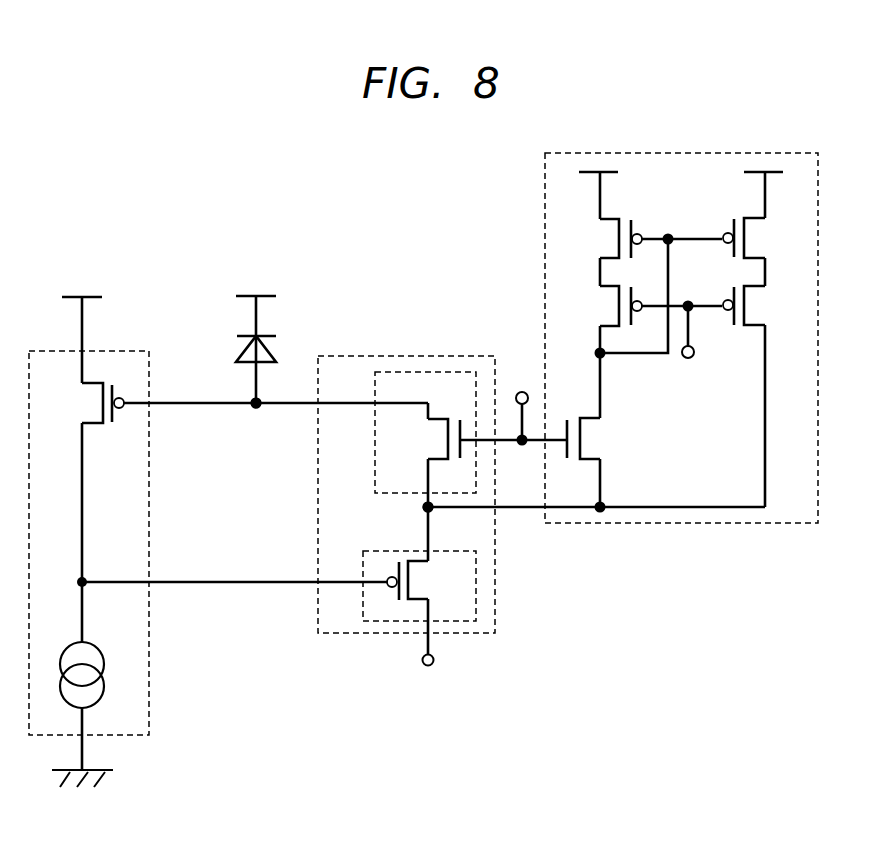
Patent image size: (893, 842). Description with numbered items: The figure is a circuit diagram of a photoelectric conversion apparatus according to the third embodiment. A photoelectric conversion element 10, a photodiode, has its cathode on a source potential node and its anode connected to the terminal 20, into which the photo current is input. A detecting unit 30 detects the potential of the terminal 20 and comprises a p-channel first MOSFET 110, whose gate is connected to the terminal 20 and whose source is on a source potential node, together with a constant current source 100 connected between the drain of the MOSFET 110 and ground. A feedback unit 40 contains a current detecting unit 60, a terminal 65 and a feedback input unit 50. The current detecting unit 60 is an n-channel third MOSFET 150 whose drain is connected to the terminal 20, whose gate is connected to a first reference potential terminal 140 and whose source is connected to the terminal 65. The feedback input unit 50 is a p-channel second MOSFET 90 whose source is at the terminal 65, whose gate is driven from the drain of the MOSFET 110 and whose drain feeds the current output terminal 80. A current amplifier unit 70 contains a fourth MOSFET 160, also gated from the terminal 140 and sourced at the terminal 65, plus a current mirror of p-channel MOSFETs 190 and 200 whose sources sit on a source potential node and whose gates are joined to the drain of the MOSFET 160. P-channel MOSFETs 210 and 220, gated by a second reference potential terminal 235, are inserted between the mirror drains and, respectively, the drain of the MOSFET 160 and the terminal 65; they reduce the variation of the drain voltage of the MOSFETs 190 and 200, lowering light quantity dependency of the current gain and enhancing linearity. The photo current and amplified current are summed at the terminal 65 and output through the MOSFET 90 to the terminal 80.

The photoelectric conversion element 10 is at (270, 348).
The terminal 20 is at (256, 410).
The detecting unit 30 is at (150, 640).
The feedback unit 40 is at (363, 633).
The feedback input unit 50 is at (378, 551).
The current detecting unit 60 is at (373, 445).
The terminal 65 is at (433, 510).
The current amplifier unit 70 is at (690, 523).
The current output terminal 80 is at (428, 666).
The second MOSFET 90 is at (420, 581).
The constant current source 100 is at (88, 641).
The first MOSFET 110 is at (88, 406).
The first reference potential terminal 140 is at (521, 392).
The third MOSFET 150 is at (440, 443).
The fourth MOSFET 160 is at (588, 440).
The fifth MOSFET 190 is at (612, 242).
The sixth MOSFET 200 is at (753, 238).
The seventh MOSFET 210 is at (612, 309).
The eighth MOSFET 220 is at (753, 305).
The second reference potential terminal 235 is at (688, 358).